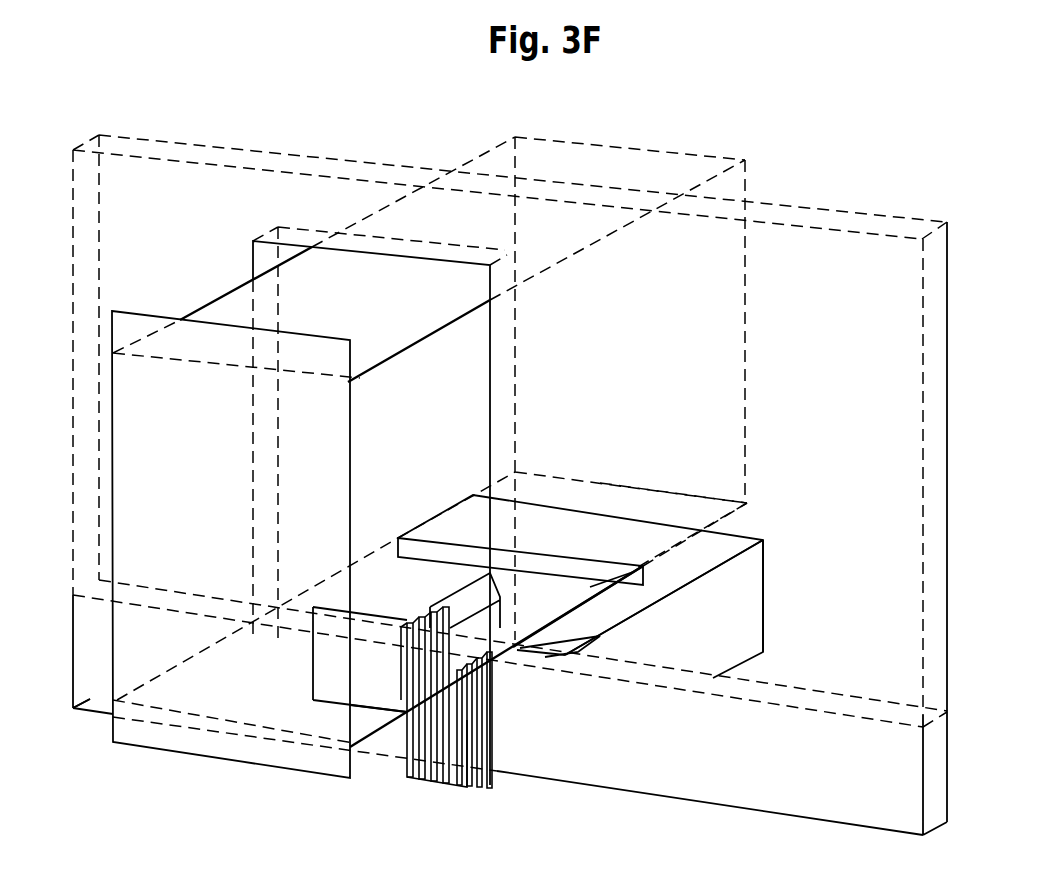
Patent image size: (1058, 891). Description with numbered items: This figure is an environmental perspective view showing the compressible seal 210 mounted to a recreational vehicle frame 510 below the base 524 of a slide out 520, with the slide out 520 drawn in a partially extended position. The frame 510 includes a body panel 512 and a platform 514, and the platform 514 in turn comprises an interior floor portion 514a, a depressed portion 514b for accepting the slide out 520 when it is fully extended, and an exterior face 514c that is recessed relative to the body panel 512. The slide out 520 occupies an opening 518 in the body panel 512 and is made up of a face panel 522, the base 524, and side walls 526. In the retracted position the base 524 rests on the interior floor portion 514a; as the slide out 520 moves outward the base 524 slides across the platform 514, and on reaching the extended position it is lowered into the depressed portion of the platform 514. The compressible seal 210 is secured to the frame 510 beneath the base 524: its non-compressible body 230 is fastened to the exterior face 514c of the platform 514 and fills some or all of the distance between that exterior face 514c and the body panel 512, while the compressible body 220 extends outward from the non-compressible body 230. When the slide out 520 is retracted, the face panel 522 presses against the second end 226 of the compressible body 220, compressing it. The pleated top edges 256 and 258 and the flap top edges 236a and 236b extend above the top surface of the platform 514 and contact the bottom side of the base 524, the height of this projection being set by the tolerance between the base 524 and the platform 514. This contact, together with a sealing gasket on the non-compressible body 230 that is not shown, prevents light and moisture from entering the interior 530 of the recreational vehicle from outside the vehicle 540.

The compressible seal 210 is at (409, 683).
The compressible body 220 is at (473, 735).
The second end 226 is at (418, 780).
The non-compressible body 230 is at (590, 597).
The flap top edge 236a is at (533, 573).
The flap top edge 236b is at (452, 590).
The pleated top edge 256 is at (590, 632).
The pleated top edge 258 is at (430, 608).
The recreational vehicle frame 510 is at (757, 829).
The body panel 512 is at (78, 712).
The platform 514 is at (654, 507).
The interior floor portion 514a is at (745, 533).
The depressed portion 514b is at (357, 573).
The exterior face 514c is at (373, 707).
The opening 518 is at (407, 253).
The slide out 520 is at (291, 784).
The face panel 522 is at (113, 440).
The base 524 is at (365, 742).
The side walls 526 is at (222, 292).
The interior 530 is at (510, 431).
The vehicle 540 is at (114, 768).